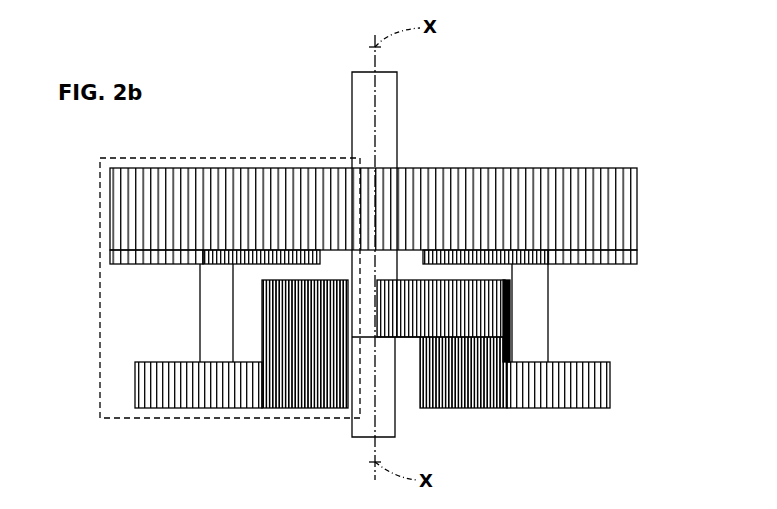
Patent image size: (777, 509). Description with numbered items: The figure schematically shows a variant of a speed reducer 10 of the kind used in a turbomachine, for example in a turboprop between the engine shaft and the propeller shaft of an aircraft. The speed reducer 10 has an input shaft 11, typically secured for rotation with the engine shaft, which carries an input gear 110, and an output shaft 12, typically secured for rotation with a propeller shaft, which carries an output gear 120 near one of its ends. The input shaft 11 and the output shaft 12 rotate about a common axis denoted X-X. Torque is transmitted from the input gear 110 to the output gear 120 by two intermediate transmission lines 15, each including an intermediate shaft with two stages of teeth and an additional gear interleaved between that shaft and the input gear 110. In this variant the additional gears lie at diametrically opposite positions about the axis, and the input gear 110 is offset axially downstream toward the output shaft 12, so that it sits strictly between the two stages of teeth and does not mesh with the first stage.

The speed reducer 10 is at (503, 112).
The input shaft 11 is at (390, 418).
The output shaft 12 is at (397, 113).
The intermediate transmission line 15 is at (100, 273).
The input gear 110 is at (430, 308).
The output gear 120 is at (257, 202).